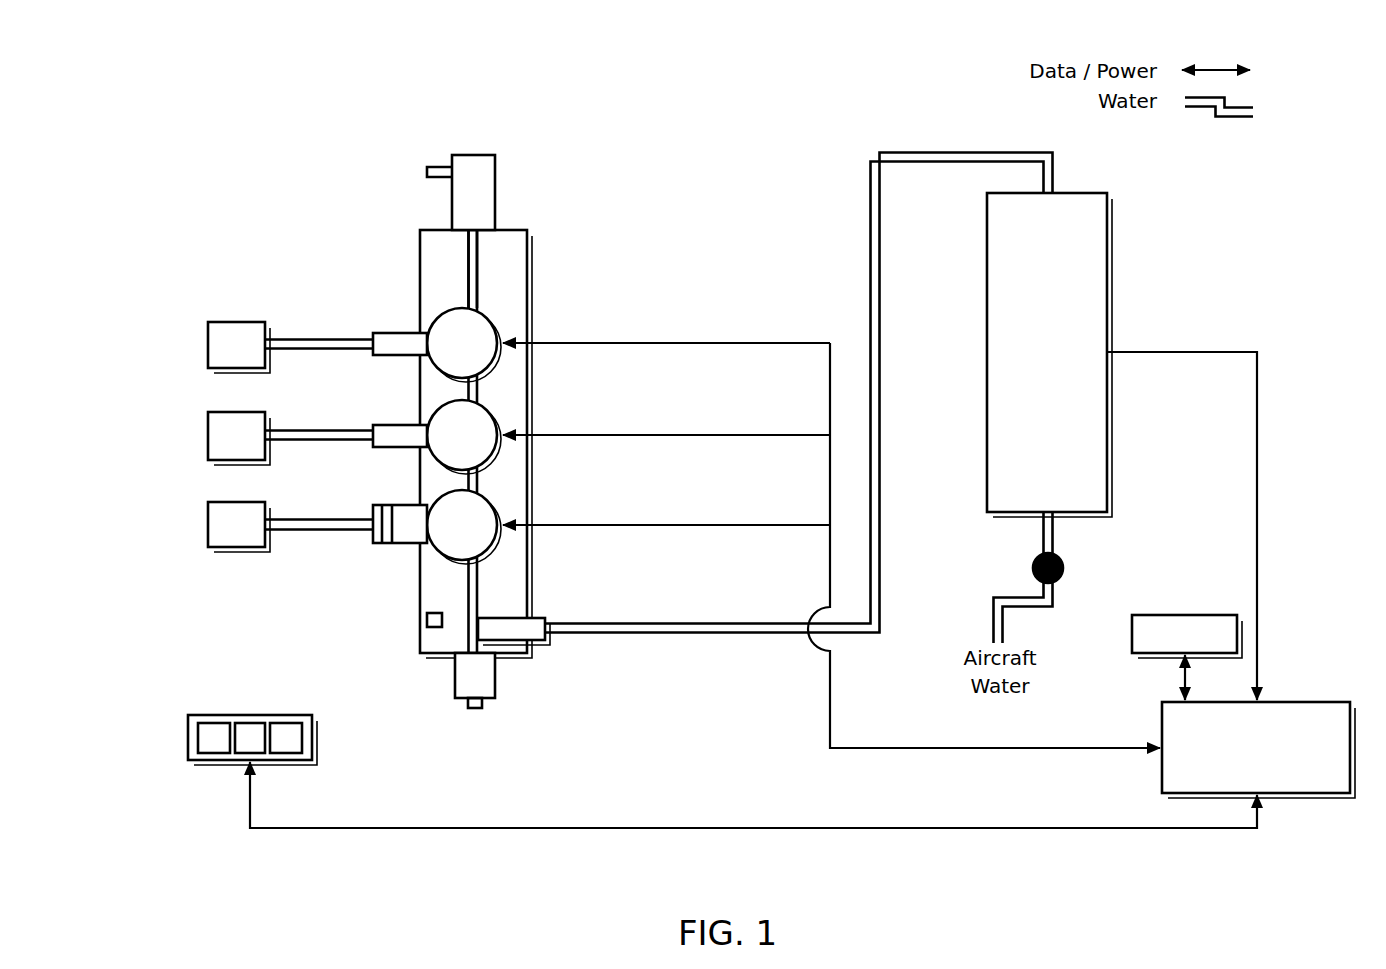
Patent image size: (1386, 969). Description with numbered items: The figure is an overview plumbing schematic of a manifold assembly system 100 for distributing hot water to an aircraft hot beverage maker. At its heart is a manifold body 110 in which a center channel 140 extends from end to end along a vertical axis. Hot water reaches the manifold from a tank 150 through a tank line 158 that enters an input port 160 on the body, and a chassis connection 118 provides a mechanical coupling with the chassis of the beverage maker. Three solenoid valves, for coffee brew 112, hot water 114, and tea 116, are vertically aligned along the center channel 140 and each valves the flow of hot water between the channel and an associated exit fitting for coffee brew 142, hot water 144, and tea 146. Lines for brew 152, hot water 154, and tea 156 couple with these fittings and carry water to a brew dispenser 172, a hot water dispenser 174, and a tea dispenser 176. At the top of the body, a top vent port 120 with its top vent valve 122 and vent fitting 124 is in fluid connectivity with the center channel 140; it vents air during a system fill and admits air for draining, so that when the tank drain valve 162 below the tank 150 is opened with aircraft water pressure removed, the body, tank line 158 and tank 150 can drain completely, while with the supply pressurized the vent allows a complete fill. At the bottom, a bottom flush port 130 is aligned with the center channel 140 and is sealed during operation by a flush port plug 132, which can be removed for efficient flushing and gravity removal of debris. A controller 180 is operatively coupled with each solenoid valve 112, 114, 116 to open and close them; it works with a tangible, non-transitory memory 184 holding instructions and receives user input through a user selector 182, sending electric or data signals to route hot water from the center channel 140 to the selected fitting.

The manifold assembly system 100 is at (96, 106).
The manifold body 110 is at (420, 278).
The coffee brew solenoid valve 112 is at (487, 329).
The hot water solenoid valve 114 is at (487, 420).
The tea solenoid valve 116 is at (487, 511).
The chassis connection 118 is at (425, 620).
The top vent port 120 is at (477, 232).
The inlet port 122 is at (475, 154).
The vent fitting 124 is at (427, 172).
The bottom flush port 130 is at (453, 675).
The flush port plug 132 is at (476, 710).
The center channel 140 is at (474, 273).
The coffee brew exit fitting 142 is at (411, 356).
The hot water exit fitting 144 is at (411, 448).
The tea exit fitting 146 is at (405, 545).
The tank 150 is at (987, 247).
The brew line 152 is at (343, 338).
The hot water line 154 is at (343, 429).
The tea line 156 is at (350, 518).
The tank line 158 is at (657, 637).
The input port 160 is at (540, 642).
The tank drain valve 162 is at (1035, 560).
The brew dispenser 172 is at (207, 345).
The hot water dispenser 174 is at (207, 435).
The tea dispenser 176 is at (207, 523).
The controller 180 is at (1278, 702).
The user selector 182 is at (226, 715).
The memory 184 is at (1152, 615).